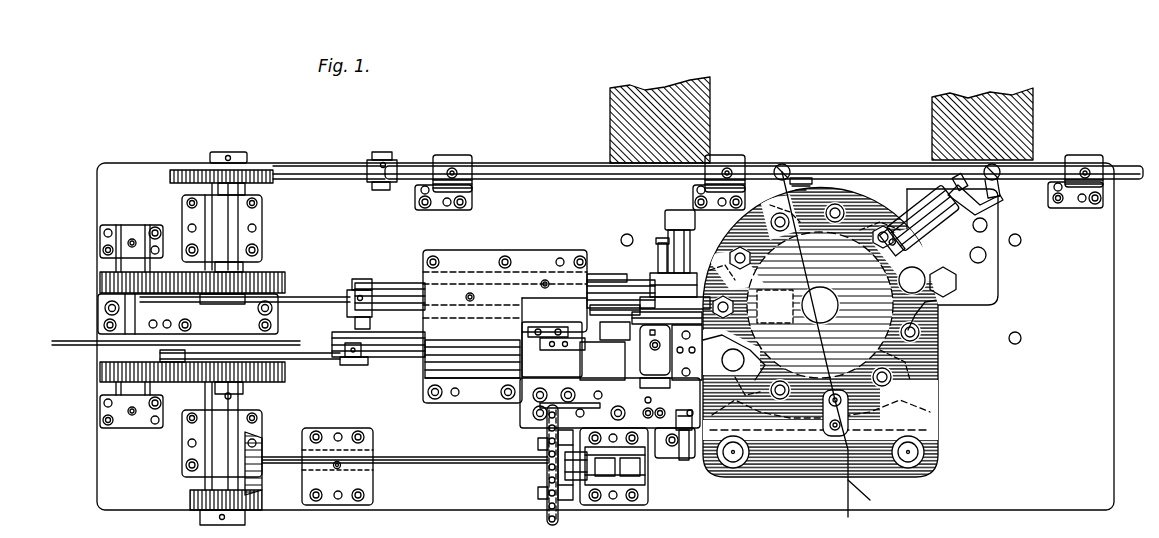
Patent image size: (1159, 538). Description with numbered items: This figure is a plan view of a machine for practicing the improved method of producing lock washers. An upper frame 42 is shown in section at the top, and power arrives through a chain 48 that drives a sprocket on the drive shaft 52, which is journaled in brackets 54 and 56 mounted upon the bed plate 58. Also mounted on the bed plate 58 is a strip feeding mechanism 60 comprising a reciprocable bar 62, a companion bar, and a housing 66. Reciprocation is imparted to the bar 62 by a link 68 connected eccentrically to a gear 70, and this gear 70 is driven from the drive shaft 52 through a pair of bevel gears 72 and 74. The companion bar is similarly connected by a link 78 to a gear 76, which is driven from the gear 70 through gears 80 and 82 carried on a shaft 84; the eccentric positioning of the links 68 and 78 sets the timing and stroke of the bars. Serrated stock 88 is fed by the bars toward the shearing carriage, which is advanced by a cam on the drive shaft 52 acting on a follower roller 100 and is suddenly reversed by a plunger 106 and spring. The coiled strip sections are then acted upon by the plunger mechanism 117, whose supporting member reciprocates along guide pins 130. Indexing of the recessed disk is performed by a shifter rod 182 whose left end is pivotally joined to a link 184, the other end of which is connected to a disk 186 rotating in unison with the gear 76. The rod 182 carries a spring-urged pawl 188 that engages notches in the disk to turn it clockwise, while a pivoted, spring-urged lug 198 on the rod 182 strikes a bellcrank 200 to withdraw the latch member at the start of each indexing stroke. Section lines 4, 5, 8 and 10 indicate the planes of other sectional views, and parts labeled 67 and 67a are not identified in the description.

The section line 4- 4 is at (712, 52).
The section line 5- 5 is at (782, 164).
The section line 8- 8 is at (697, 280).
The section line 10- 10 is at (512, 232).
The upper frame 42 is at (700, 108).
The chain 48 is at (668, 483).
The drive shaft 52 is at (452, 465).
The bracket 54 is at (328, 472).
The bracket 56 is at (618, 480).
The bed plate 58 is at (958, 497).
The strip feeding mechanism 60 is at (453, 406).
The reciprocable bar 62 is at (372, 350).
The housing 66 is at (505, 326).
The rod 67 is at (395, 292).
The rod extension 67a is at (606, 290).
The link 68 is at (312, 360).
The gear 70 is at (222, 368).
The bevel gear 72 is at (262, 495).
The bevel gear 74 is at (190, 497).
The gear 76 is at (230, 212).
The link 78 is at (300, 296).
The gear 80 is at (100, 370).
The gear 82 is at (100, 280).
The shaft 84 is at (128, 300).
The serrated stock 88 is at (82, 343).
The follower roller 100 is at (686, 460).
The plunger 106 is at (682, 300).
The plunger mechanism 117 is at (940, 408).
The guide pins 130 is at (738, 458).
The shifter rod 182 is at (558, 170).
The link 184 is at (314, 168).
The disk 186 is at (368, 176).
The pawl 188 is at (800, 178).
The lug 198 is at (1000, 186).
The bellcrank 200 is at (995, 212).